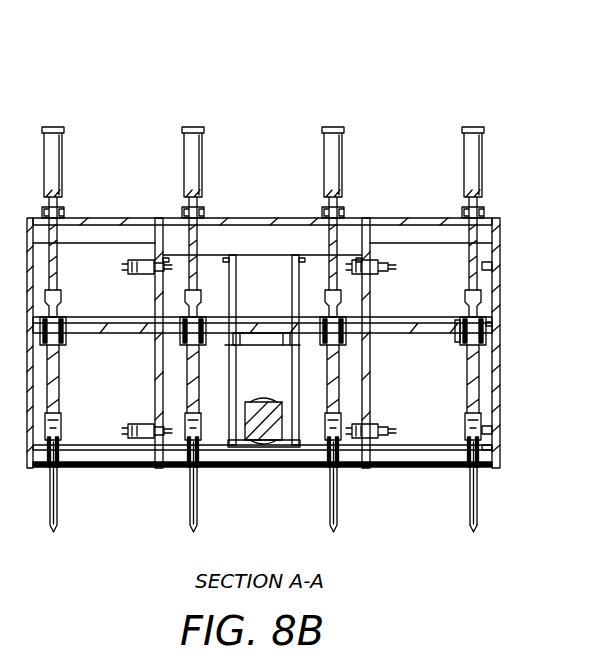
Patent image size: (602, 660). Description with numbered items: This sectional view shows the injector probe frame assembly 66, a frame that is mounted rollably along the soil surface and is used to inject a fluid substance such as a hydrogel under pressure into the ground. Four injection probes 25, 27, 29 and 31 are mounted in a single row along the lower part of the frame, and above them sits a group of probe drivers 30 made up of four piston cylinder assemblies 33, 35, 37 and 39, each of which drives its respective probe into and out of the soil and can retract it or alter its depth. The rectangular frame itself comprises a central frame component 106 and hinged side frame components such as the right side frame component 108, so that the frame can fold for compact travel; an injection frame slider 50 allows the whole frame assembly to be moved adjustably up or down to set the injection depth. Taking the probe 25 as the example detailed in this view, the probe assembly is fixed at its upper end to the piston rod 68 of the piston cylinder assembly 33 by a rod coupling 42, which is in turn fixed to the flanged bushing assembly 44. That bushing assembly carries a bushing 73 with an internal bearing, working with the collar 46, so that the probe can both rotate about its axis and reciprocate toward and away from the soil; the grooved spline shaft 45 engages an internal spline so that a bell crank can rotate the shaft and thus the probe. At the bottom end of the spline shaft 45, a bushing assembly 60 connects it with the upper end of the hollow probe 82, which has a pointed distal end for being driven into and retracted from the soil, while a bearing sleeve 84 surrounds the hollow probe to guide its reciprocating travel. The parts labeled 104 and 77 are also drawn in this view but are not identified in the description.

The probe drivers 30 is at (32, 153).
The injection frame slider 50 is at (14, 335).
The injector probe frame assembly 66 is at (292, 78).
The central frame component 106 is at (112, 217).
The middle frame section 104 is at (258, 217).
The right side frame component 108 is at (420, 217).
The piston cylinder assembly 39 is at (62, 153).
The piston cylinder assembly 37 is at (202, 153).
The piston cylinder assembly 35 is at (342, 153).
The piston cylinder assembly 33 is at (482, 153).
The piston rod 68 is at (481, 249).
The rod coupling 42 is at (485, 298).
The bushing 73 is at (497, 336).
The collar 46 is at (490, 350).
The bushing assembly 44 is at (463, 341).
The spline shaft 45 is at (484, 381).
The lower bracket 77 is at (484, 419).
The bushing assembly 60 is at (462, 428).
The bearing sleeve 84 is at (488, 456).
The injector probe 25 is at (481, 490).
The hollow probe 82 is at (482, 522).
The injection probe 31 is at (57, 489).
The injection probe 29 is at (197, 489).
The injection probe 27 is at (337, 489).